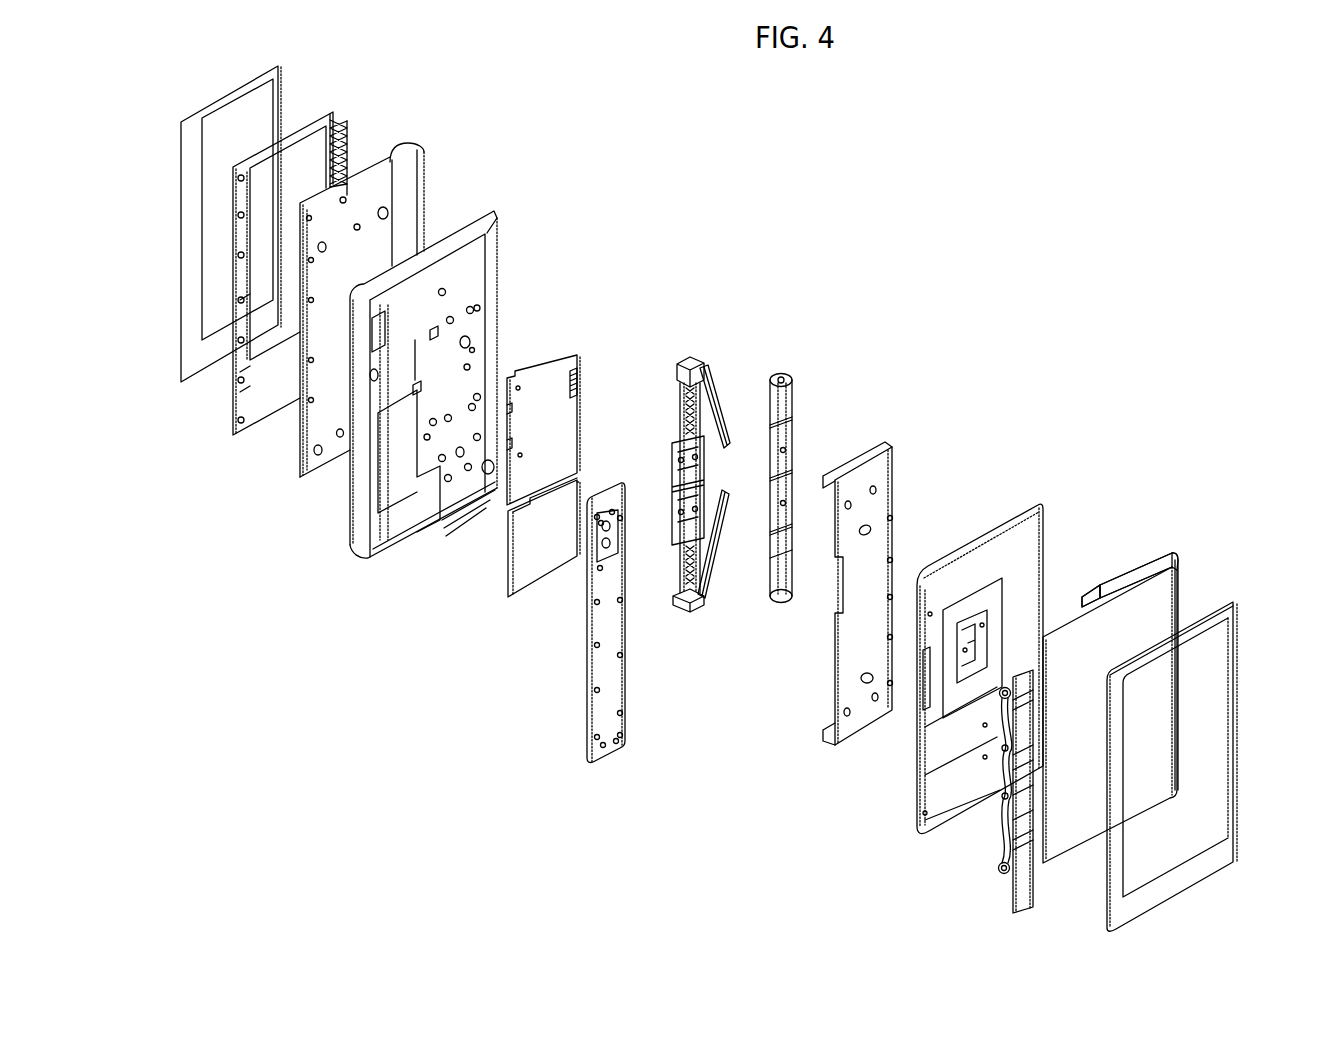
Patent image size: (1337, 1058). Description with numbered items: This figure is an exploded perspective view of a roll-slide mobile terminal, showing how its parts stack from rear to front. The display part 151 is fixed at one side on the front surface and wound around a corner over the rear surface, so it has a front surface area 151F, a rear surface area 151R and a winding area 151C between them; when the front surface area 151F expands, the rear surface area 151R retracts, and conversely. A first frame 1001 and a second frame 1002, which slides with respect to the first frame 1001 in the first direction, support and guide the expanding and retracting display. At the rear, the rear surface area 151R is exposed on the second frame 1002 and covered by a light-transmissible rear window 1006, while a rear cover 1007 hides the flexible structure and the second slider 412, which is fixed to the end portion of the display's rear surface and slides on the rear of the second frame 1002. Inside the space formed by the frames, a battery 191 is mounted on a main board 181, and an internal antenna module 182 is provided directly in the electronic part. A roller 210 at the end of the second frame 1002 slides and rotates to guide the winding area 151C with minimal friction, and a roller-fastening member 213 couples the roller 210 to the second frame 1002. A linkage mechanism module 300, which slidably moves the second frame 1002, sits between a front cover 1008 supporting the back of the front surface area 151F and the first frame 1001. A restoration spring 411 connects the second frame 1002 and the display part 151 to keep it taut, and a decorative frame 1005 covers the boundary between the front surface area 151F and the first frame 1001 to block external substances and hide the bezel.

The rear window 1006 is at (289, 89).
The rear cover 1007 is at (357, 125).
The second frame 1002 is at (437, 156).
The first frame 1001 is at (507, 210).
The main board 181 is at (570, 425).
The battery 191 is at (507, 580).
The internal antenna module 182 is at (631, 690).
The linkage mechanism module 300 is at (715, 360).
The roller 210 is at (800, 392).
The roller-fastening member 213 is at (868, 470).
The front cover 1008 is at (1000, 530).
The restoration spring 411 is at (1000, 862).
The second slider 412 is at (1030, 880).
The display part 151 is at (1222, 508).
The front surface area 151F is at (1124, 583).
The rear surface area 151R is at (1143, 573).
The winding area 151C is at (1178, 588).
The decorative frame 1005 is at (1241, 607).